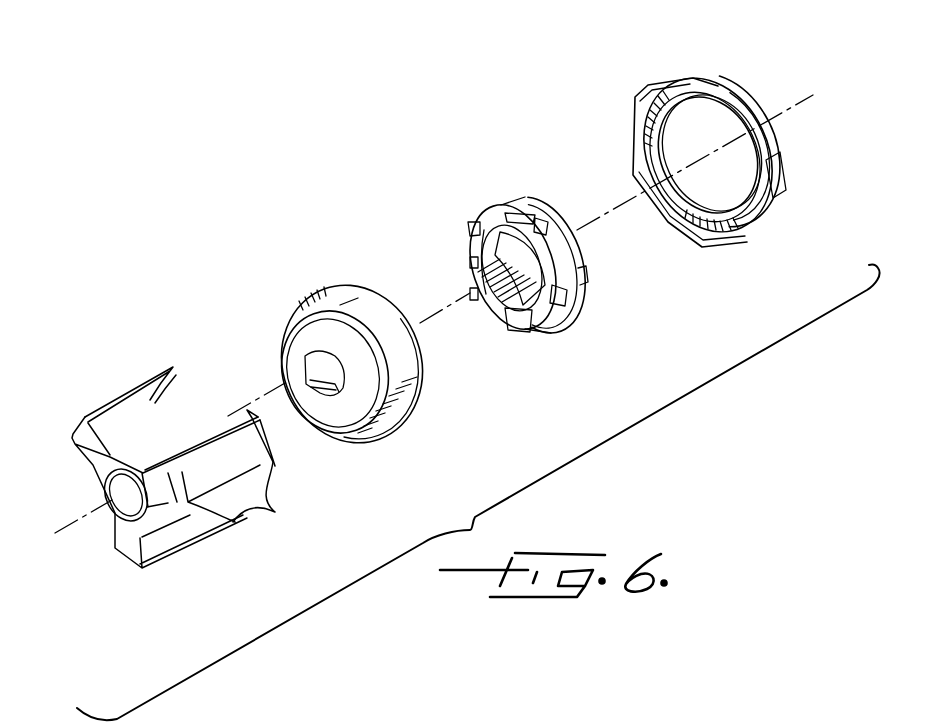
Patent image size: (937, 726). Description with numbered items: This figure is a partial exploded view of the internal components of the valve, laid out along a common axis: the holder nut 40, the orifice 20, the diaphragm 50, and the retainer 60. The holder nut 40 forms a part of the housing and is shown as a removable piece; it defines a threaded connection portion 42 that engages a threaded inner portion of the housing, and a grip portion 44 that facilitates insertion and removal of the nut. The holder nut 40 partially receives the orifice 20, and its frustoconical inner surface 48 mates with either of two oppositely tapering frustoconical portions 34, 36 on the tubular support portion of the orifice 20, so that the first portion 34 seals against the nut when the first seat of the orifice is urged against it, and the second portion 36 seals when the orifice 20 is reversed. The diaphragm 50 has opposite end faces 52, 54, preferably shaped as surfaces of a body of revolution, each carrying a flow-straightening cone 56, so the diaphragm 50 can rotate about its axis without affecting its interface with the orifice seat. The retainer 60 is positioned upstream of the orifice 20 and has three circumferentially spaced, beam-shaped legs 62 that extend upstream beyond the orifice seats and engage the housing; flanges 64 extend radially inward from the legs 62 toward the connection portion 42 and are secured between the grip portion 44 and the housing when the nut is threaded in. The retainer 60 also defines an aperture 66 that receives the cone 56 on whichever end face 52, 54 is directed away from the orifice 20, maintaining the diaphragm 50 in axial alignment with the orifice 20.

The orifice 20 is at (577, 318).
The first frustoconical portion 34 is at (507, 207).
The second frustoconical portion 36 is at (550, 223).
The holder nut 40 is at (747, 233).
The connection portion 42 is at (743, 102).
The grip portion 44 is at (667, 83).
The frustoconical inner surface 48 is at (695, 227).
The diaphragm 50 is at (332, 298).
The end face 52 is at (300, 328).
The end face 54 is at (418, 370).
The flow-straightening cone 56 is at (313, 375).
The retainer 60 is at (102, 465).
The legs 62 is at (108, 400).
The flanges 64 is at (275, 510).
The aperture 66 is at (112, 510).